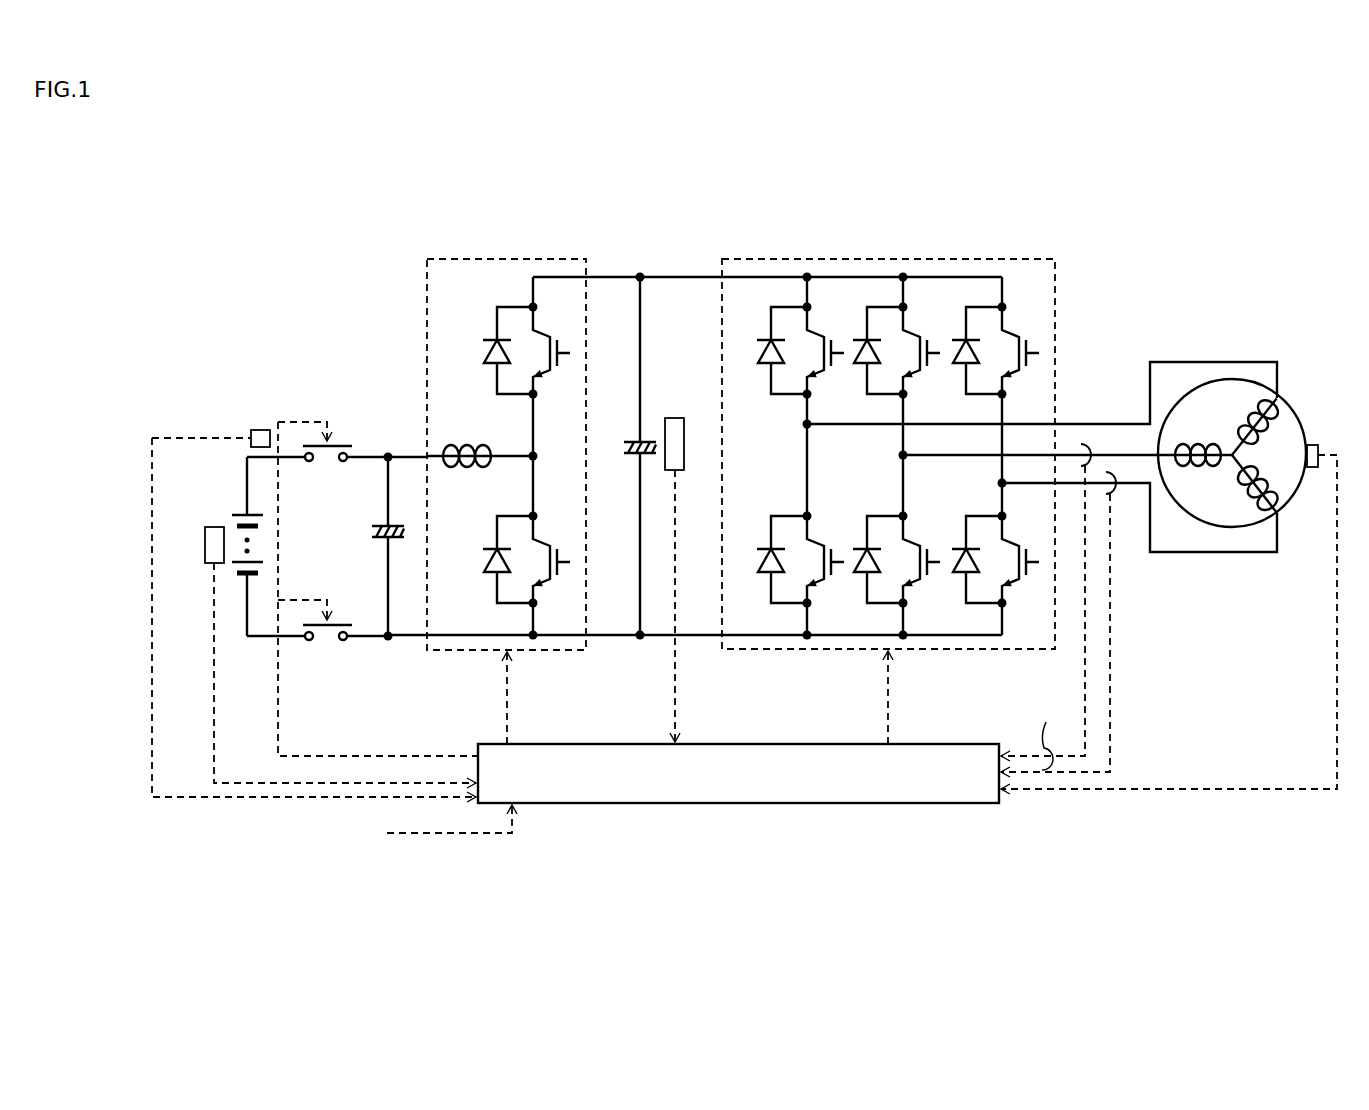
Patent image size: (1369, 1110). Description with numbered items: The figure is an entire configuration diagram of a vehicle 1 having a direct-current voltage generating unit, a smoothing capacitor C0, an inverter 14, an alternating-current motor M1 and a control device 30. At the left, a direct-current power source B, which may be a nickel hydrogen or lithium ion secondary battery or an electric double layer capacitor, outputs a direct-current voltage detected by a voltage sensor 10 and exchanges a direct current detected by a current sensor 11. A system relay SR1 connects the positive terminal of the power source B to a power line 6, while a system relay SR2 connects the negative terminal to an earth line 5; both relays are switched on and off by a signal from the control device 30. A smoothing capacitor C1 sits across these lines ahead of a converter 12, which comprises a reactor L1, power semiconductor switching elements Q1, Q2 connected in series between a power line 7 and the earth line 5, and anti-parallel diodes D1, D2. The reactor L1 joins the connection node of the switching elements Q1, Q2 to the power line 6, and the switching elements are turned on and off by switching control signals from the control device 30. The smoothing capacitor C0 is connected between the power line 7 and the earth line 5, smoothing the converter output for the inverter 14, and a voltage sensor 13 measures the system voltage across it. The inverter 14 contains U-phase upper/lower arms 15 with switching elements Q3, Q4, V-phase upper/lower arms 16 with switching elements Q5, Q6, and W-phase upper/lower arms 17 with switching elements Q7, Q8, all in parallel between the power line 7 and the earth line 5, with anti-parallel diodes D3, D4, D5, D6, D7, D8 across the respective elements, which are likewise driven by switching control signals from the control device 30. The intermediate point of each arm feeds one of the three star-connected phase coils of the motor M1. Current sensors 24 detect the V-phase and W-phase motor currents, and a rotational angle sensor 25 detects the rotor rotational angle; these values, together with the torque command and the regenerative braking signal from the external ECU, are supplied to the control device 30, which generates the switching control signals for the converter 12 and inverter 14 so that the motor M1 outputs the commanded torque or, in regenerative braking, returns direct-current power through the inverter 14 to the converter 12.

The vehicle 1 is at (707, 187).
The earth line 5 is at (613, 645).
The power line 6 is at (396, 456).
The power line 7 is at (675, 276).
The voltage sensor 10 is at (208, 527).
The current sensor 11 is at (261, 430).
The converter 12 is at (510, 259).
The voltage sensor 13 is at (673, 418).
The inverter 14 is at (883, 259).
The U-phase upper/lower arms 15 is at (791, 433).
The V-phase upper/lower arms 16 is at (892, 458).
The W-phase upper/lower arms 17 is at (990, 488).
The current sensors 24 is at (1085, 442).
The rotational angle sensor 25 is at (1322, 442).
The control device 30 is at (800, 743).
The direct-current power source B is at (240, 510).
The system relay SR1 is at (333, 445).
The system relay SR2 is at (333, 625).
The smoothing capacitor C1 is at (383, 527).
The reactor L1 is at (460, 445).
The smoothing capacitor C0 is at (635, 442).
The power semiconductor switching element Q1 is at (551, 350).
The power semiconductor switching element Q2 is at (551, 559).
The switching element Q3 is at (825, 350).
The switching element Q4 is at (825, 559).
The switching element Q5 is at (921, 350).
The switching element Q6 is at (921, 559).
The switching element Q7 is at (1020, 350).
The switching element Q8 is at (1020, 559).
The anti-parallel diode D1 is at (492, 350).
The anti-parallel diode D2 is at (492, 559).
The anti-parallel diode D3 is at (771, 351).
The anti-parallel diode D4 is at (771, 559).
The anti-parallel diode D5 is at (867, 355).
The anti-parallel diode D6 is at (867, 563).
The anti-parallel diode D7 is at (966, 355).
The anti-parallel diode D8 is at (966, 563).
The alternating-current motor M1 is at (1298, 415).